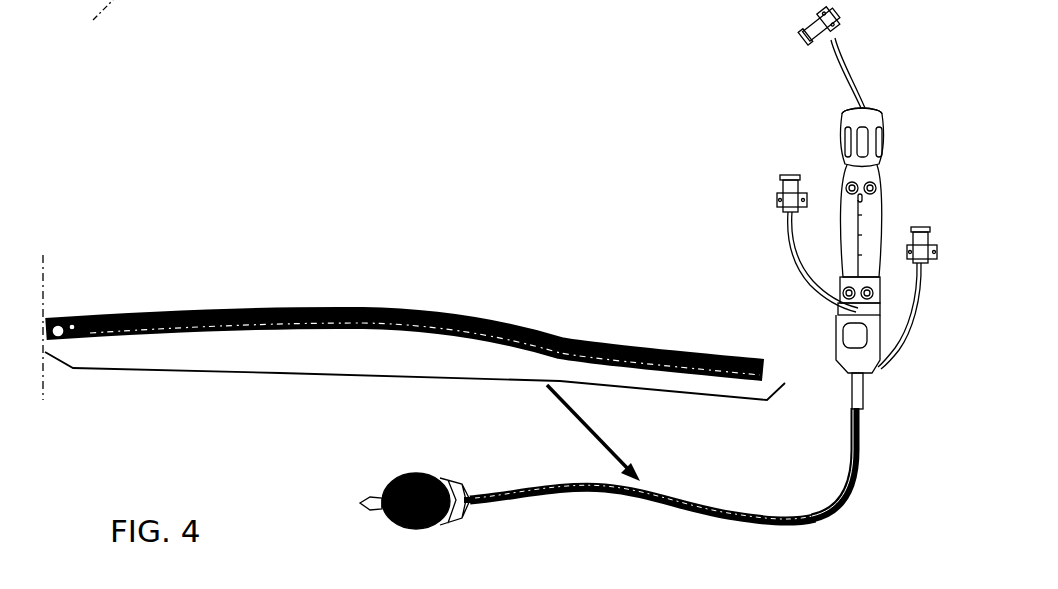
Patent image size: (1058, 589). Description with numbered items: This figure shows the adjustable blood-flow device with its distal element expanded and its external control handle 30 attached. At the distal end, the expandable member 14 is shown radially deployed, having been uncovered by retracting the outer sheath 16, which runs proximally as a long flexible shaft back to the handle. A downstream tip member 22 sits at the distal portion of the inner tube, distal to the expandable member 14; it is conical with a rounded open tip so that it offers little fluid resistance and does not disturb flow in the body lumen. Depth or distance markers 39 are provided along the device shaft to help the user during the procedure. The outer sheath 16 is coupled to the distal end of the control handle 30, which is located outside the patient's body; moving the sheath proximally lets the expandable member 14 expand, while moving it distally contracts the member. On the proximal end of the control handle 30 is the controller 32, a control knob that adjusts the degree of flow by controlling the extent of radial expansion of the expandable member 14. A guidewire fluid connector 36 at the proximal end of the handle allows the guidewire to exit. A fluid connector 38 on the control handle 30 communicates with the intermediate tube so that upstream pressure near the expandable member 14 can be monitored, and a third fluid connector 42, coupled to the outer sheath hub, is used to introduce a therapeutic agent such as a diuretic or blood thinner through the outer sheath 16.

The expandable member 14 is at (433, 460).
The outer sheath 16 is at (840, 510).
The downstream tip member 22 is at (364, 494).
The control handle 30 is at (810, 323).
The controller 32 is at (843, 133).
The guidewire fluid connector 36 is at (826, 23).
The fluid connector 38 is at (922, 257).
The depth or distance markers 39 is at (480, 323).
The third fluid connector 42 is at (790, 205).